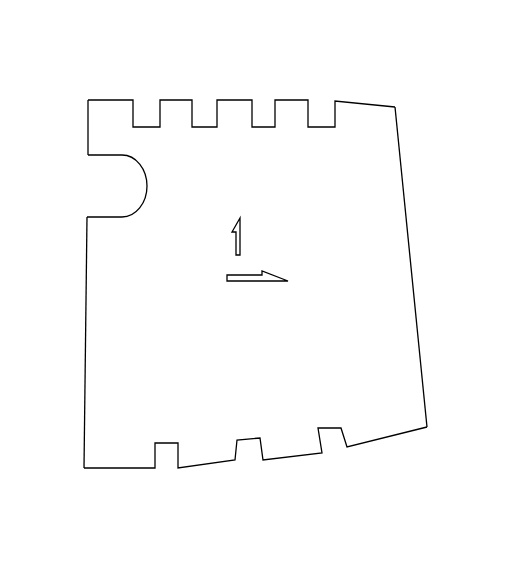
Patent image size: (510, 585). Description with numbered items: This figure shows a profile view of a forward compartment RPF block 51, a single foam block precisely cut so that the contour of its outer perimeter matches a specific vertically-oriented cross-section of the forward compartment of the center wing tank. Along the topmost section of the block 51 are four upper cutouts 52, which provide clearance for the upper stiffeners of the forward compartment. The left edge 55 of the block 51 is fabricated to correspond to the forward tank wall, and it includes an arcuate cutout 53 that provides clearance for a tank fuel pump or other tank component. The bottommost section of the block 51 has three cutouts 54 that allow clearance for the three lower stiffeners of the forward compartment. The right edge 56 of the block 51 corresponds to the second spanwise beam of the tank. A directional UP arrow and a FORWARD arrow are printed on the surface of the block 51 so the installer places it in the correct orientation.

The forward compartment RPF block 51 is at (368, 58).
The upper cutouts 52 is at (145, 110).
The arcuate cutout 53 is at (117, 193).
The cutouts 54 is at (165, 457).
The left edge 55 is at (85, 347).
The right edge 56 is at (412, 282).